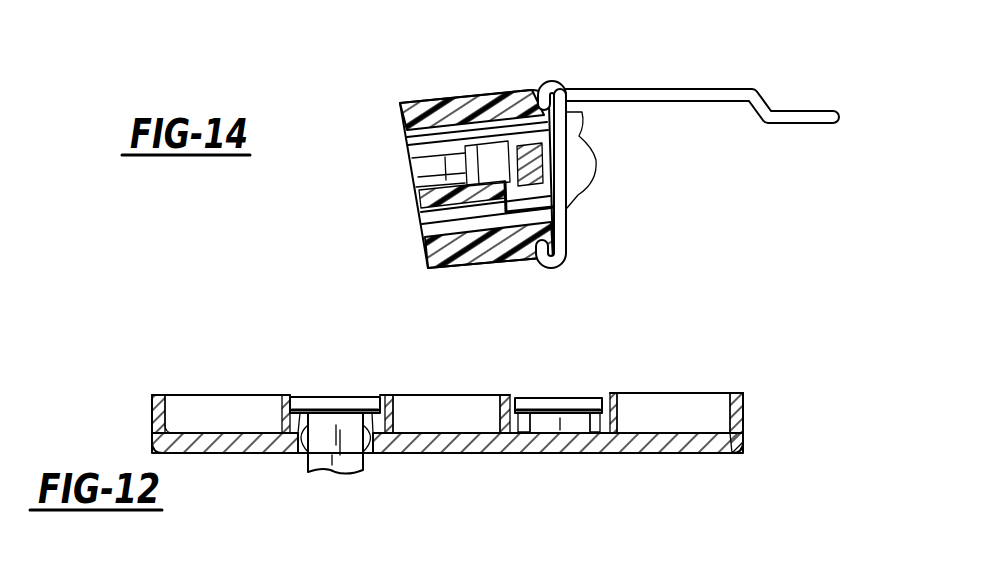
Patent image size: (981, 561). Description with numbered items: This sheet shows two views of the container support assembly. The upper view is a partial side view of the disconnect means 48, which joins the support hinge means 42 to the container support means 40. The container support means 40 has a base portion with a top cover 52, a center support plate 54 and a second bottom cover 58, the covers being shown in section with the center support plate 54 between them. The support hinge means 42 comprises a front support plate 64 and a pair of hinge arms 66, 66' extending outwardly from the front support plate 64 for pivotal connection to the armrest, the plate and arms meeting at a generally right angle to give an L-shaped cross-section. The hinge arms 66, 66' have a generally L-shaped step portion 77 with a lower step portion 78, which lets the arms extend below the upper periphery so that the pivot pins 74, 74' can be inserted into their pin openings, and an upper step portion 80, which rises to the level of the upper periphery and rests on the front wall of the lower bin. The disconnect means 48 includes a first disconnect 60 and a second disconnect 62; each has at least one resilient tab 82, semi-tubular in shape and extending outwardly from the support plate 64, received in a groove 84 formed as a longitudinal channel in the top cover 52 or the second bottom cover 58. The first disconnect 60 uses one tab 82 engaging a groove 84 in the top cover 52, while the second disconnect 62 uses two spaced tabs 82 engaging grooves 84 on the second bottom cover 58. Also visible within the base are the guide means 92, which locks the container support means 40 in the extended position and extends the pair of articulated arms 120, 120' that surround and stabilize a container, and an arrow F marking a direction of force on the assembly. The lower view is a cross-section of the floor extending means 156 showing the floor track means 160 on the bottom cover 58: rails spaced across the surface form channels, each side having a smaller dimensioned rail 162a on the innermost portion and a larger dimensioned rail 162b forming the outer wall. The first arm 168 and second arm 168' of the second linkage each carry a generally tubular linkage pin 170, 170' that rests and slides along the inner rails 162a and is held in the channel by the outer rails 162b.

In FIG. 14, the container support means 40 is at (429, 163).
In FIG. 14, the support hinge means 42 is at (661, 84).
In FIG. 14, the disconnect means 48 is at (352, 112).
In FIG. 14, the top cover 52 is at (463, 108).
In FIG. 14, the center support plate 54 is at (425, 212).
In FIG. 14, the second bottom cover 58 is at (500, 260).
In FIG. 12, the second bottom cover 58 is at (727, 445).
In FIG. 14, the first disconnect 60 is at (547, 69).
In FIG. 14, the second disconnect 62 is at (565, 268).
In FIG. 14, the front support plate 64 is at (550, 173).
In FIG. 14, the hinge arm 66 is at (706, 127).
In FIG. 14, the hinge arm 66' is at (706, 127).
In FIG. 14, the pivot pin 74 is at (706, 143).
In FIG. 14, the pivot pin 74' is at (706, 143).
In FIG. 14, the L-shaped step portion 77 is at (760, 92).
In FIG. 14, the lower step portion 78 is at (787, 127).
In FIG. 14, the upper step portion 80 is at (696, 88).
In FIG. 14, the resilient tab 82 is at (554, 83).
In FIG. 14, the groove 84 is at (513, 87).
In FIG. 14, the guide means 92 is at (428, 229).
In FIG. 14, the articulated arm 120 is at (398, 163).
In FIG. 14, the articulated arm 120' is at (444, 177).
In FIG. 12, the tray 156 is at (274, 342).
In FIG. 12, the floor track means 160 is at (338, 389).
In FIG. 12, the smaller dimensioned rail 162a is at (305, 446).
In FIG. 12, the larger dimensioned rail 162b is at (287, 396).
In FIG. 12, the first arm 168 is at (335, 482).
In FIG. 12, the linkage pin 170 is at (335, 363).
In FIG. 12, the second arm 168' is at (577, 473).
In FIG. 12, the linkage pin 170' is at (561, 377).
In FIG. 14, the force direction F is at (400, 104).